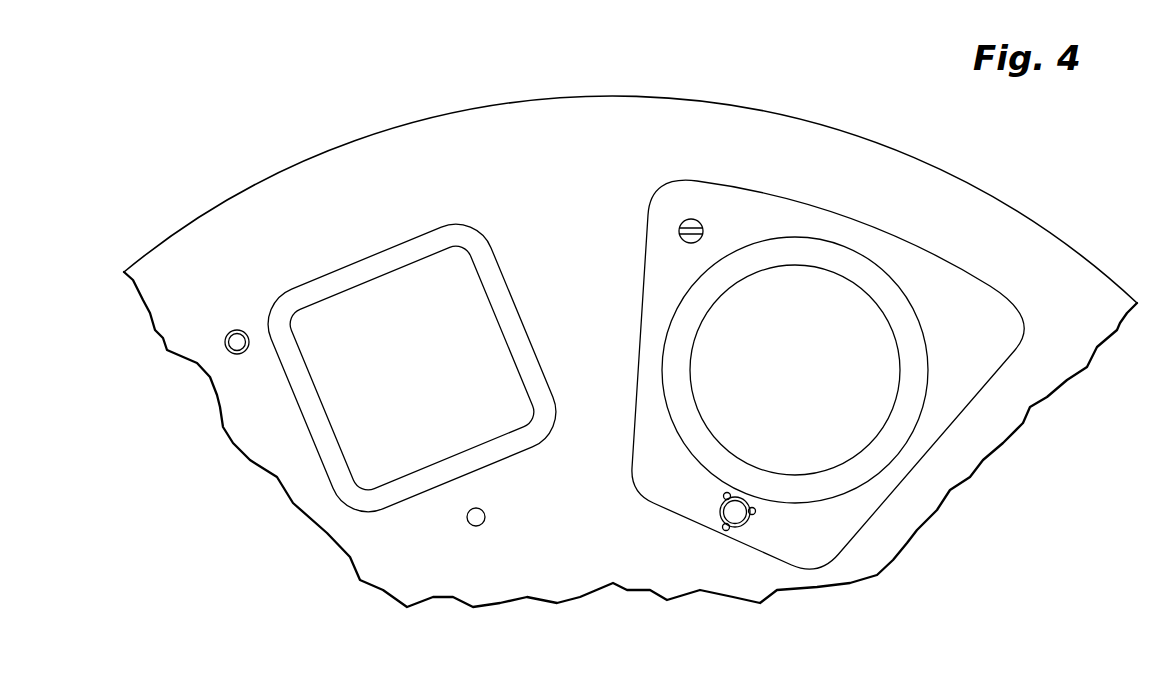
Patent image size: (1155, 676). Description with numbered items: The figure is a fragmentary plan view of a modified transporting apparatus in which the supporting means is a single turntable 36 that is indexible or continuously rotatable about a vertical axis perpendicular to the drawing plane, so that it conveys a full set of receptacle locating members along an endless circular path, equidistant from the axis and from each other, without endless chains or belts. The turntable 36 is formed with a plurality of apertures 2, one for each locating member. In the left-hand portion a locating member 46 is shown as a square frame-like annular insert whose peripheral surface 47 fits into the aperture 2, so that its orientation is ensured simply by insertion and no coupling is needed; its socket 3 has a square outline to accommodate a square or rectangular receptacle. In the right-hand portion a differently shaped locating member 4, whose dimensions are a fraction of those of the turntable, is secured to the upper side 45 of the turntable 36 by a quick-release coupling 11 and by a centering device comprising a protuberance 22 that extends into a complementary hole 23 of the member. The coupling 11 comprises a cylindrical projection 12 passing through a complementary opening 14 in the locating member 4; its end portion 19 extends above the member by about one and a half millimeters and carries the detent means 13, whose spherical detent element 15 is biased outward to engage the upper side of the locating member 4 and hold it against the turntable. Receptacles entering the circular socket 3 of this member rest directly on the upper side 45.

The aperture 2 is at (412, 352).
The socket 3 is at (800, 379).
The locating member 4 is at (709, 362).
The quick-release coupling 11 is at (735, 517).
The projection 12 is at (725, 505).
The detent means 13 is at (723, 498).
The opening 14 is at (752, 515).
The spherical detent element 15 is at (727, 529).
The end portion of the projection 19 is at (720, 512).
The protuberance 22 is at (693, 194).
The hole 23 is at (700, 222).
The turntable 36 is at (1077, 278).
The upper side of the turntable 45 is at (977, 453).
The annular insert locating member 46 is at (468, 238).
The peripheral surface 47 is at (500, 273).